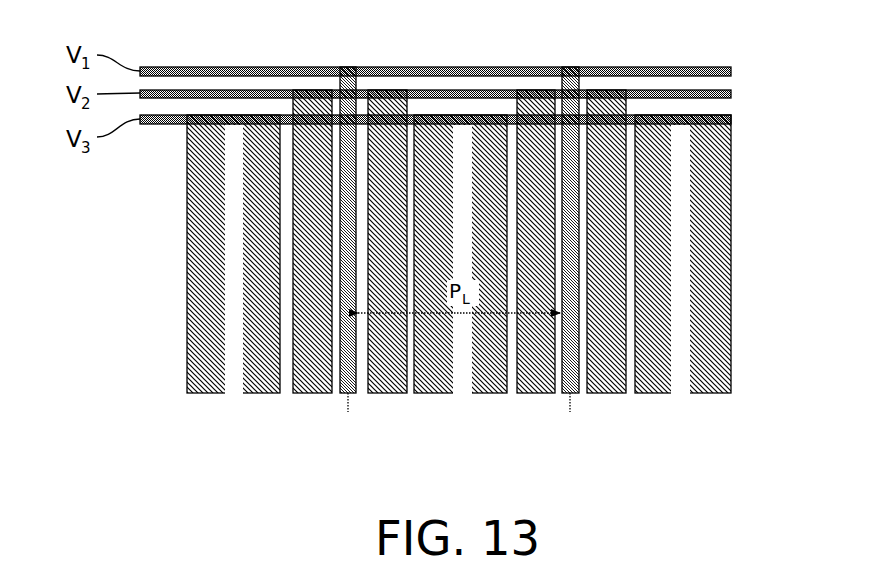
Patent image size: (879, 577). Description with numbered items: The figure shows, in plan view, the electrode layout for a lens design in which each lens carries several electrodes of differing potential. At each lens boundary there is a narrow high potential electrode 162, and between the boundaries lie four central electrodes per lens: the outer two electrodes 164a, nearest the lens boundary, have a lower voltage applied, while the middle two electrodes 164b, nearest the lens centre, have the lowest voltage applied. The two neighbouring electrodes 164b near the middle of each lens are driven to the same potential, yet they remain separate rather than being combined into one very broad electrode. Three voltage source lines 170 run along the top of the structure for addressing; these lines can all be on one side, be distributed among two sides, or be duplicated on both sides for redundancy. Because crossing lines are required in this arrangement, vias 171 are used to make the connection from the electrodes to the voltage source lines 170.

The high potential electrode 162 is at (338, 395).
The outer central electrodes 164a is at (388, 395).
The middle central electrodes 164b is at (492, 395).
The voltage source lines 170 is at (752, 58).
The vias 171 is at (348, 67).